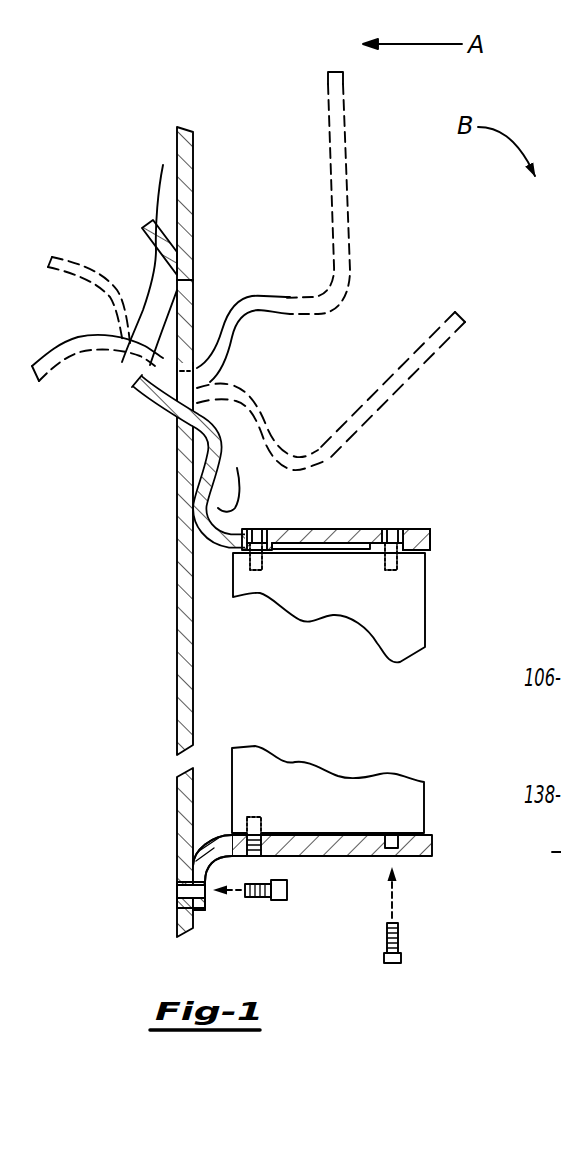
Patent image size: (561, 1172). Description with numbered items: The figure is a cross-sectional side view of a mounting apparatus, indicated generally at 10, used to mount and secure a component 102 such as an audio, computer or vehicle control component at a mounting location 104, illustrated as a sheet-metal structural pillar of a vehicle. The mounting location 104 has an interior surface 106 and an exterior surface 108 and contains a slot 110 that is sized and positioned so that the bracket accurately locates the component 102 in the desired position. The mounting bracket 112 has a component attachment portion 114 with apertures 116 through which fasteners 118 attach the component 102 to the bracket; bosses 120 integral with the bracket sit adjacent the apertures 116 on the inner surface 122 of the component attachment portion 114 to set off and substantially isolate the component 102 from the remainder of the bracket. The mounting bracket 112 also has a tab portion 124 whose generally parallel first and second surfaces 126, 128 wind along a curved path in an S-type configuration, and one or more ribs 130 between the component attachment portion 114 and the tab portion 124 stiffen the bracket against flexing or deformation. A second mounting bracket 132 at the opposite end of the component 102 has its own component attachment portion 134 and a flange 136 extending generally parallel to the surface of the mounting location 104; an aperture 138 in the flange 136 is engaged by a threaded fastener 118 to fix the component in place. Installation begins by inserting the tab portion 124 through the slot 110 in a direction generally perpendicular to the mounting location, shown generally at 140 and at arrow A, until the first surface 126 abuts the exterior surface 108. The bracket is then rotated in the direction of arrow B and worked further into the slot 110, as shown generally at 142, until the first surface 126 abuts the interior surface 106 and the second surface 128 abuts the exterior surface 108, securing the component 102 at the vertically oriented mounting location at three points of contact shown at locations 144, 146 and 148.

The exhaust system 10 is at (500, 576).
The component 102 is at (425, 612).
The mounting location 104 is at (264, 190).
The interior surface 106 is at (177, 617).
The exterior surface 108 is at (193, 675).
The slot 110 is at (178, 430).
The mounting bracket 112 is at (332, 516).
The component attachment portion 114 is at (432, 535).
The apertures 116 is at (260, 528).
The fasteners 118 is at (397, 571).
The bosses 120 is at (270, 550).
The inner surface 122 is at (338, 550).
The tab portion 124 is at (132, 393).
The first surface 126 is at (164, 178).
The second surface 128 is at (146, 244).
The ribs 130 is at (237, 470).
The second mounting bracket 132 is at (310, 928).
The component attachment portion 134 is at (435, 850).
The flange 136 is at (197, 912).
The aperture 138 is at (182, 895).
The tab insertion position 140 is at (343, 80).
The tab rotation position 142 is at (462, 317).
The point of contact 144 is at (194, 280).
The point of contact 146 is at (206, 502).
The point of contact 148 is at (222, 390).